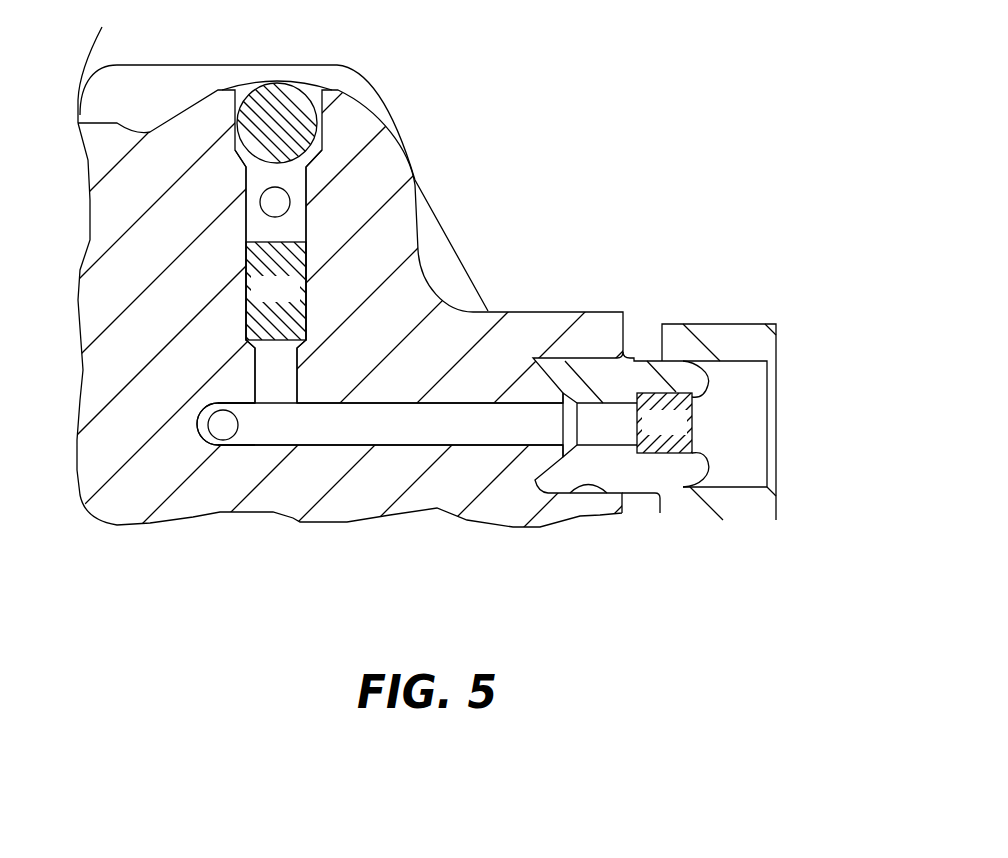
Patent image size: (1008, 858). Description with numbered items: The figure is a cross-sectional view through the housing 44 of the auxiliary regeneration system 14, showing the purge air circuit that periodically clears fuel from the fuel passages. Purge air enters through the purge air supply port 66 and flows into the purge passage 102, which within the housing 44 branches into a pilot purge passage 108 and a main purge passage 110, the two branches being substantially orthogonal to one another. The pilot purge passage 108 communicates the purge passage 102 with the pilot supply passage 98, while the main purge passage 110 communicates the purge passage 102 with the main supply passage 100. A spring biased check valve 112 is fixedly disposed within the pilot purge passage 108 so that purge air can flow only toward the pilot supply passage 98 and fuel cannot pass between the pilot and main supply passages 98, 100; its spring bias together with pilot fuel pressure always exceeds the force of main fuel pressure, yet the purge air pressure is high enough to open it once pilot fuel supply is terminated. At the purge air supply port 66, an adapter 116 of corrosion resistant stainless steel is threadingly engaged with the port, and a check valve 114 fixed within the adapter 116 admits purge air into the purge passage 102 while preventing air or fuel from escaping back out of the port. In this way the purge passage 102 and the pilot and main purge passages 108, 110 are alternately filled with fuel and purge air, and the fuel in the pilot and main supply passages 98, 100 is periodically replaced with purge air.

The auxiliary regeneration system 14 is at (545, 140).
The housing 44 is at (107, 512).
The purge air supply port 66 is at (572, 450).
The pilot supply passage 98 is at (286, 210).
The main supply passage 100 is at (224, 432).
The purge passage 102 is at (416, 432).
The pilot purge passage 108 is at (263, 367).
The main purge passage 110 is at (197, 433).
The check valve 112 is at (297, 301).
The check valve 114 is at (686, 433).
The adapter 116 is at (728, 340).